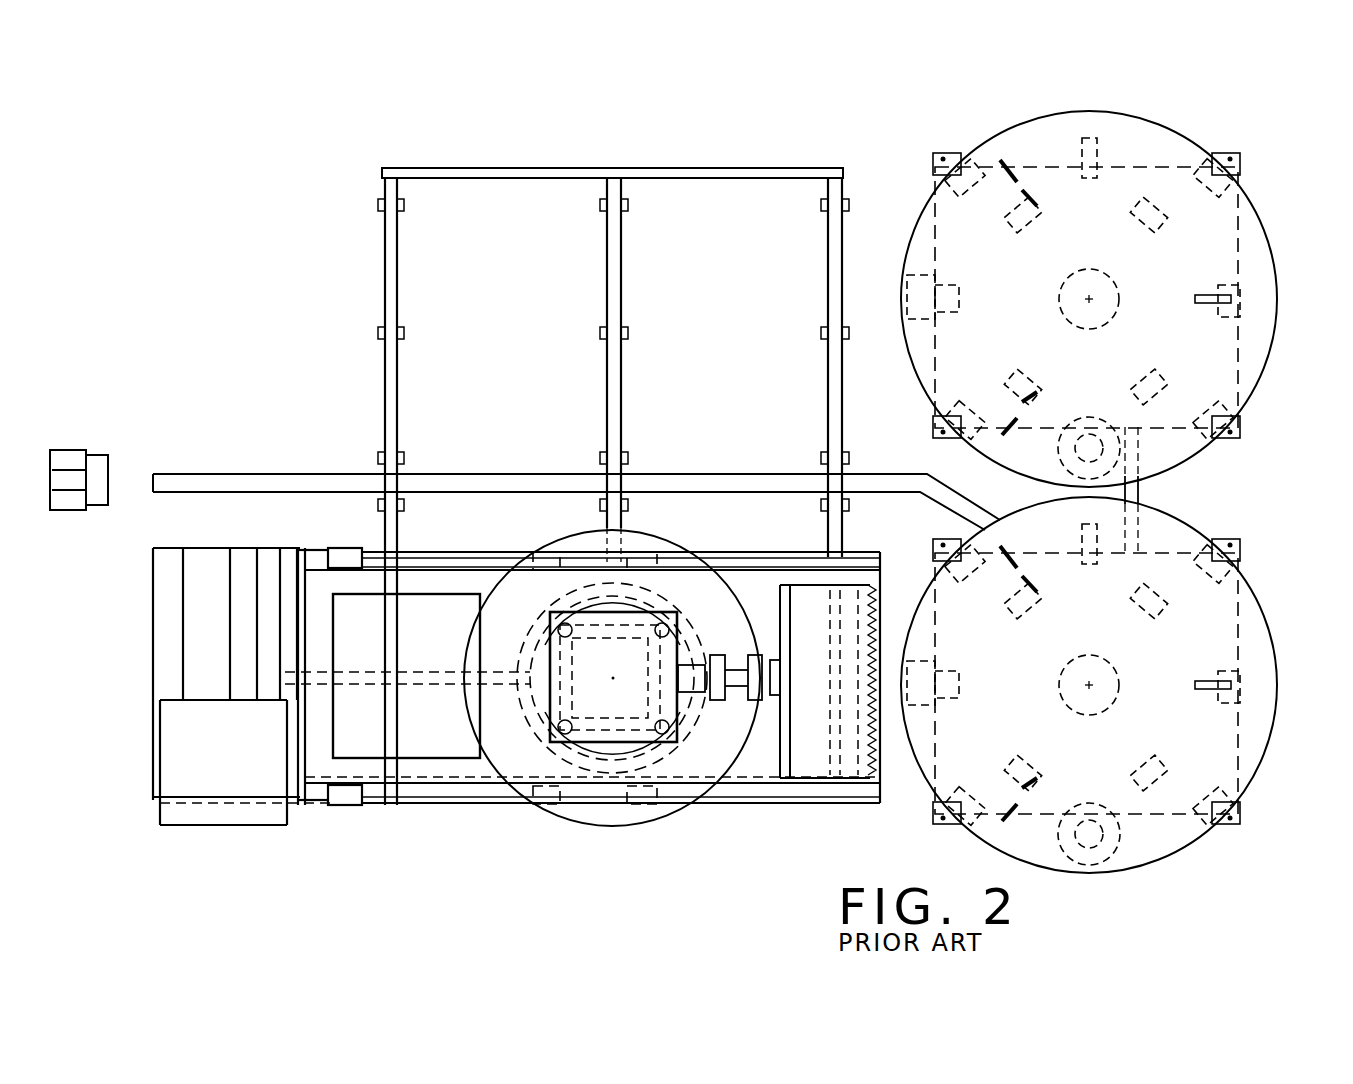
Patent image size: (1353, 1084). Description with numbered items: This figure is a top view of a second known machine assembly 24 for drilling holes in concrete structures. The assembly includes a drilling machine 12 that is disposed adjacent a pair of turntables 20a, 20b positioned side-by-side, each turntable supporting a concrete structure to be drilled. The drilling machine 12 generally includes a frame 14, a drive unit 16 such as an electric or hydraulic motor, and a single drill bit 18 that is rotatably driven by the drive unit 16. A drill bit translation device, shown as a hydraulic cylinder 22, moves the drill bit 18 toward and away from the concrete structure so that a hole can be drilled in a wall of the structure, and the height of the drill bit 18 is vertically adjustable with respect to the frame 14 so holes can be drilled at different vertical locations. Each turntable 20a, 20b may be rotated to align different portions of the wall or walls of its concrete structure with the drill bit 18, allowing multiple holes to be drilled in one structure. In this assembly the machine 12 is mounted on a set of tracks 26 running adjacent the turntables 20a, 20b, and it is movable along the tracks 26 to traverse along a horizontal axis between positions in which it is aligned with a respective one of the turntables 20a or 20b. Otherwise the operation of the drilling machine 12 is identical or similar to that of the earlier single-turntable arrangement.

The drilling machine 12 is at (352, 854).
The frame 14 is at (477, 577).
The drive unit 16 is at (660, 600).
The drill bit 18 is at (804, 760).
The turntable 20a is at (1256, 630).
The turntable 20b is at (1258, 259).
The hydraulic cylinder 22 is at (664, 698).
The machine assembly 24 is at (824, 136).
The tracks 26 is at (380, 270).